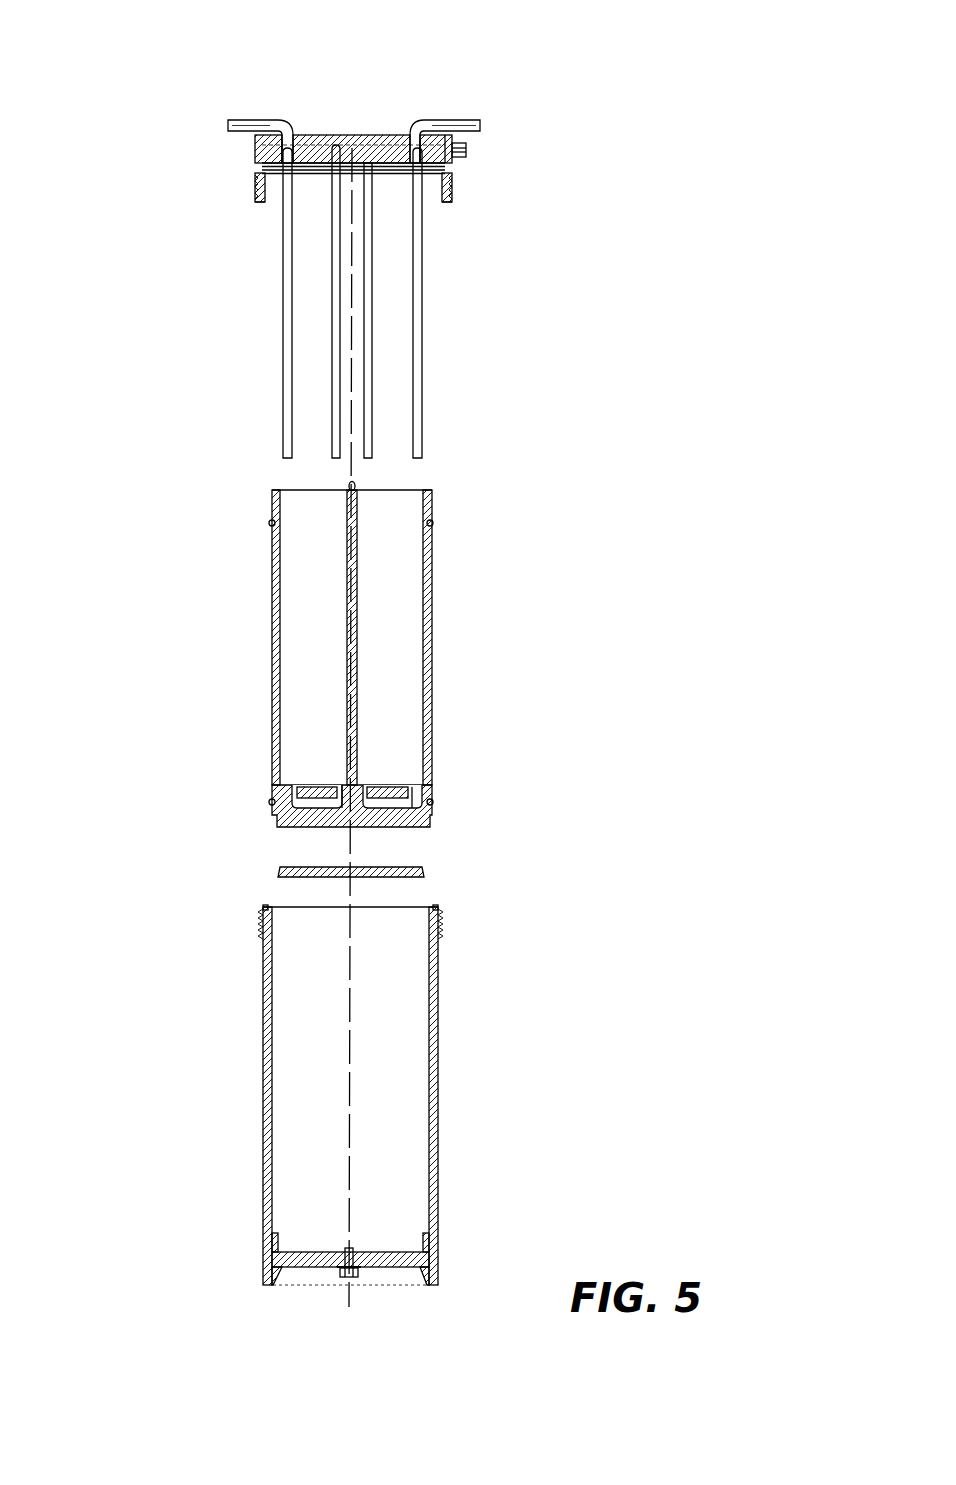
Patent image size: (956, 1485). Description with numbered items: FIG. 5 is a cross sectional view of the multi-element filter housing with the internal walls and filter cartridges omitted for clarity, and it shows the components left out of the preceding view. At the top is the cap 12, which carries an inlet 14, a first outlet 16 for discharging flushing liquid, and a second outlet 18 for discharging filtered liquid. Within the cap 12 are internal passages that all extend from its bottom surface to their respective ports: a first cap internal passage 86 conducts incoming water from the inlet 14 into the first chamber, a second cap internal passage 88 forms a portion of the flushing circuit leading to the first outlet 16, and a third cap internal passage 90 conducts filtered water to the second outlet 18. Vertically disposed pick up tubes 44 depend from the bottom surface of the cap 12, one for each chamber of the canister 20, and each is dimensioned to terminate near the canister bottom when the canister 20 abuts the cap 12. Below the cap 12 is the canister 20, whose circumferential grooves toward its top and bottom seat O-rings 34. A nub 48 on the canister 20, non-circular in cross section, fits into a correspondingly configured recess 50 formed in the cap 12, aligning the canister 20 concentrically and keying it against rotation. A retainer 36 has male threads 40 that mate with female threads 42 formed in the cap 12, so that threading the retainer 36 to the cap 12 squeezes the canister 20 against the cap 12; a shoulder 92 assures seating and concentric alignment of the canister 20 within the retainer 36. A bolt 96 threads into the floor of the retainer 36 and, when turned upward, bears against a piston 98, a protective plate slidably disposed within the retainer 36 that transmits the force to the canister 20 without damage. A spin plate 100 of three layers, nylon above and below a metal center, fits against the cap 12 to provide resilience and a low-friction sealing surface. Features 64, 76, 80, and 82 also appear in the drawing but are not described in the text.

The cap 12 is at (327, 161).
The inlet 14 is at (240, 121).
The first outlet 16 is at (458, 159).
The second outlet 18 is at (466, 121).
The canister 20 is at (434, 640).
The O-rings 34 is at (433, 521).
The retainer 36 is at (370, 1110).
The male threads 40 is at (262, 917).
The female threads 42 is at (275, 194).
The pick up tubes 44 is at (287, 362).
The nub 48 is at (347, 485).
The recess 50 is at (357, 191).
The cap header 64 is at (280, 153).
The left channel 76 is at (285, 778).
The center channel wall 80 is at (337, 778).
The right channel 82 is at (418, 778).
The first cap internal passage 86 is at (256, 132).
The second cap internal passage 88 is at (431, 150).
The third cap internal passage 90 is at (443, 126).
The shoulder 92 is at (275, 1238).
The bolt 96 is at (352, 1277).
The piston 98 is at (426, 870).
The spin plate 100 is at (397, 176).